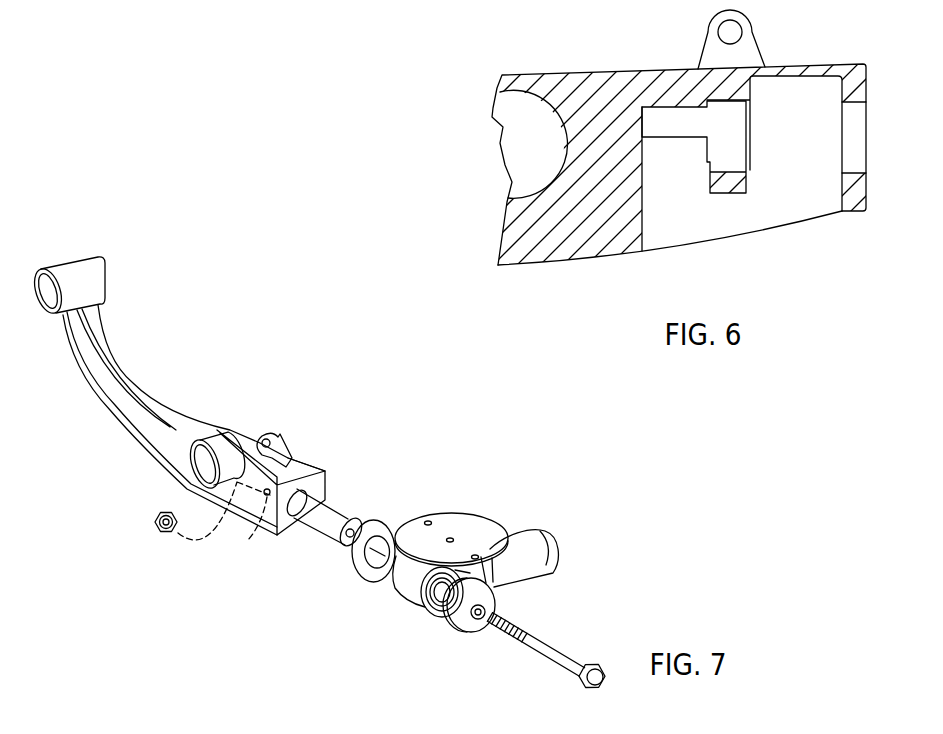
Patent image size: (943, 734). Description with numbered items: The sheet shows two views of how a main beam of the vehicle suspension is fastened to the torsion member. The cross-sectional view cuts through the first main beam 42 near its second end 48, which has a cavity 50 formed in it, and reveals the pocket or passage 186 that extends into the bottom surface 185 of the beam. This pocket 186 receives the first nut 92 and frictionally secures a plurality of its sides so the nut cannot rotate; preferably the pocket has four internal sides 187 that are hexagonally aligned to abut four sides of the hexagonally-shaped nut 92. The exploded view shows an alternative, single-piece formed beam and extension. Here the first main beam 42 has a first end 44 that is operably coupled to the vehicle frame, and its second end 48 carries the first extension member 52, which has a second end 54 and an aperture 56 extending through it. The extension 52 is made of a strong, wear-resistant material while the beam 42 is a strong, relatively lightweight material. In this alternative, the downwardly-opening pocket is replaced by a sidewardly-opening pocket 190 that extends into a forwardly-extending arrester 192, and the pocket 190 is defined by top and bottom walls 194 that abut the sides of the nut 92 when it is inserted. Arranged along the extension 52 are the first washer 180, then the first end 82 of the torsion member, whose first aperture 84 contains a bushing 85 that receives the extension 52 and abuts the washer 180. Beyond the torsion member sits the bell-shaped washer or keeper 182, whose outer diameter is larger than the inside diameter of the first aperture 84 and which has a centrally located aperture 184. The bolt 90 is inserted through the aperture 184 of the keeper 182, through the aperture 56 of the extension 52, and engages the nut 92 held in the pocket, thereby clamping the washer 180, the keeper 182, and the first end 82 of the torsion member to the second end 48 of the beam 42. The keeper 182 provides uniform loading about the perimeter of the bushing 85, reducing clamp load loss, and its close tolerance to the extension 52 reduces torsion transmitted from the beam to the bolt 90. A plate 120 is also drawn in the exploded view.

In FIG. 6, the second end 48 is at (595, 72).
In FIG. 7, the second end 48 is at (140, 457).
In FIG. 6, the internal sides 187 is at (672, 125).
In FIG. 6, the cavity 50 is at (857, 135).
In FIG. 6, the bottom surface 185 is at (543, 267).
In FIG. 6, the pocket 186 is at (662, 235).
In FIG. 7, the first end 44 is at (107, 275).
In FIG. 7, the first main beam 42 is at (148, 393).
In FIG. 7, the top and bottom walls 194 is at (230, 455).
In FIG. 7, the first extension member 52 is at (307, 476).
In FIG. 7, the second end 54 is at (338, 510).
In FIG. 7, the aperture 56 is at (353, 530).
In FIG. 7, the first washer 180 is at (395, 523).
In FIG. 7, the plate 120 is at (478, 524).
In FIG. 7, the first end 82 is at (403, 588).
In FIG. 7, the bushing 85 is at (433, 618).
In FIG. 7, the first aperture 84 is at (445, 598).
In FIG. 7, the aperture 184 is at (480, 614).
In FIG. 7, the keeper 182 is at (497, 583).
In FIG. 7, the bolt 90 is at (558, 648).
In FIG. 7, the first nut 92 is at (154, 534).
In FIG. 7, the sidewardly-opening pocket 190 is at (265, 502).
In FIG. 7, the arrester 192 is at (267, 497).